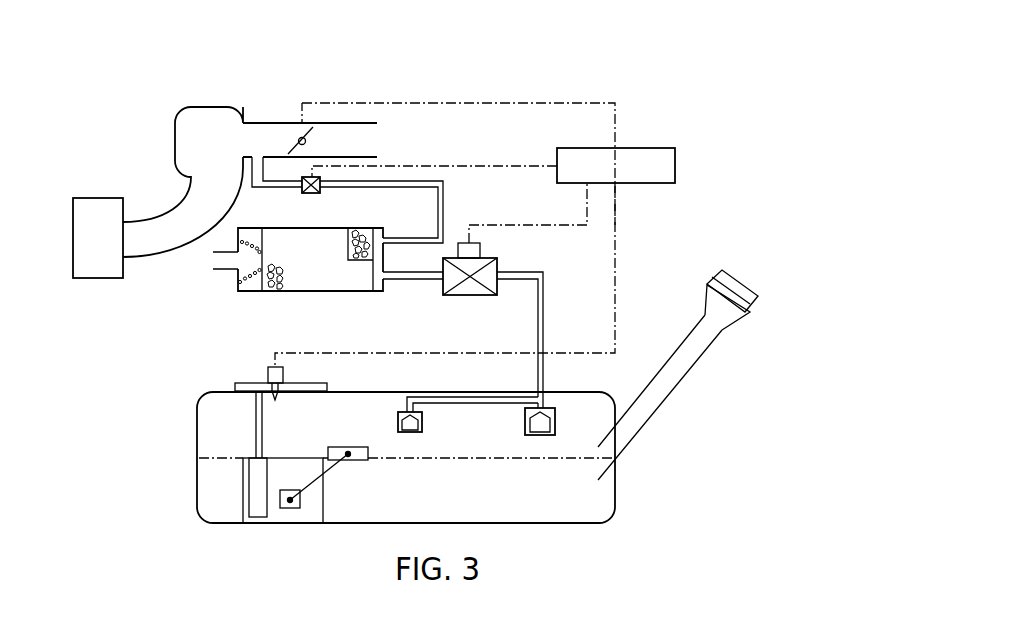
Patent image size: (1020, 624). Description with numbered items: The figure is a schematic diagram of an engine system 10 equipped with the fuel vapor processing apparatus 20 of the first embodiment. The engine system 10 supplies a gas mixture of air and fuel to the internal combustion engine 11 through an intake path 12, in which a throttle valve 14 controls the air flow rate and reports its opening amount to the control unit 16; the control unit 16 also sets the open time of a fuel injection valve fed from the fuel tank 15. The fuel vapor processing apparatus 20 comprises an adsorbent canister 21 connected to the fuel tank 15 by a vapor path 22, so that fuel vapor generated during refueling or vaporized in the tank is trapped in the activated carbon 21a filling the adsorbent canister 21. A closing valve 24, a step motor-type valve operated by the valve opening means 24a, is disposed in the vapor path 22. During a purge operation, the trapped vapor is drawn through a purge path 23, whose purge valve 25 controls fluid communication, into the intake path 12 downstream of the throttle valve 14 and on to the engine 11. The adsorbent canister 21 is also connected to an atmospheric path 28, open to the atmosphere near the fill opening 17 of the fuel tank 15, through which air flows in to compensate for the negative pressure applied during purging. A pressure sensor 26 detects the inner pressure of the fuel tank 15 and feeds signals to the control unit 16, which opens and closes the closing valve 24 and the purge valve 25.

The engine system 10 is at (100, 97).
The internal combustion engine 11 is at (96, 212).
The intake path 12 is at (260, 123).
The throttle valve 14 is at (313, 127).
The fuel tank 15 is at (195, 432).
The control unit 16 is at (660, 148).
The fill opening 17 is at (753, 317).
The fuel vapor processing apparatus 20 is at (479, 92).
The adsorbent canister 21 is at (313, 295).
The activated carbon 21a is at (373, 228).
The vapor path 22 is at (547, 307).
The purge path 23 is at (447, 200).
The closing valve 24 is at (467, 295).
The valve opening means 24a is at (480, 250).
The purge valve 25 is at (305, 193).
The pressure sensor 26 is at (268, 373).
The atmospheric path 28 is at (225, 270).